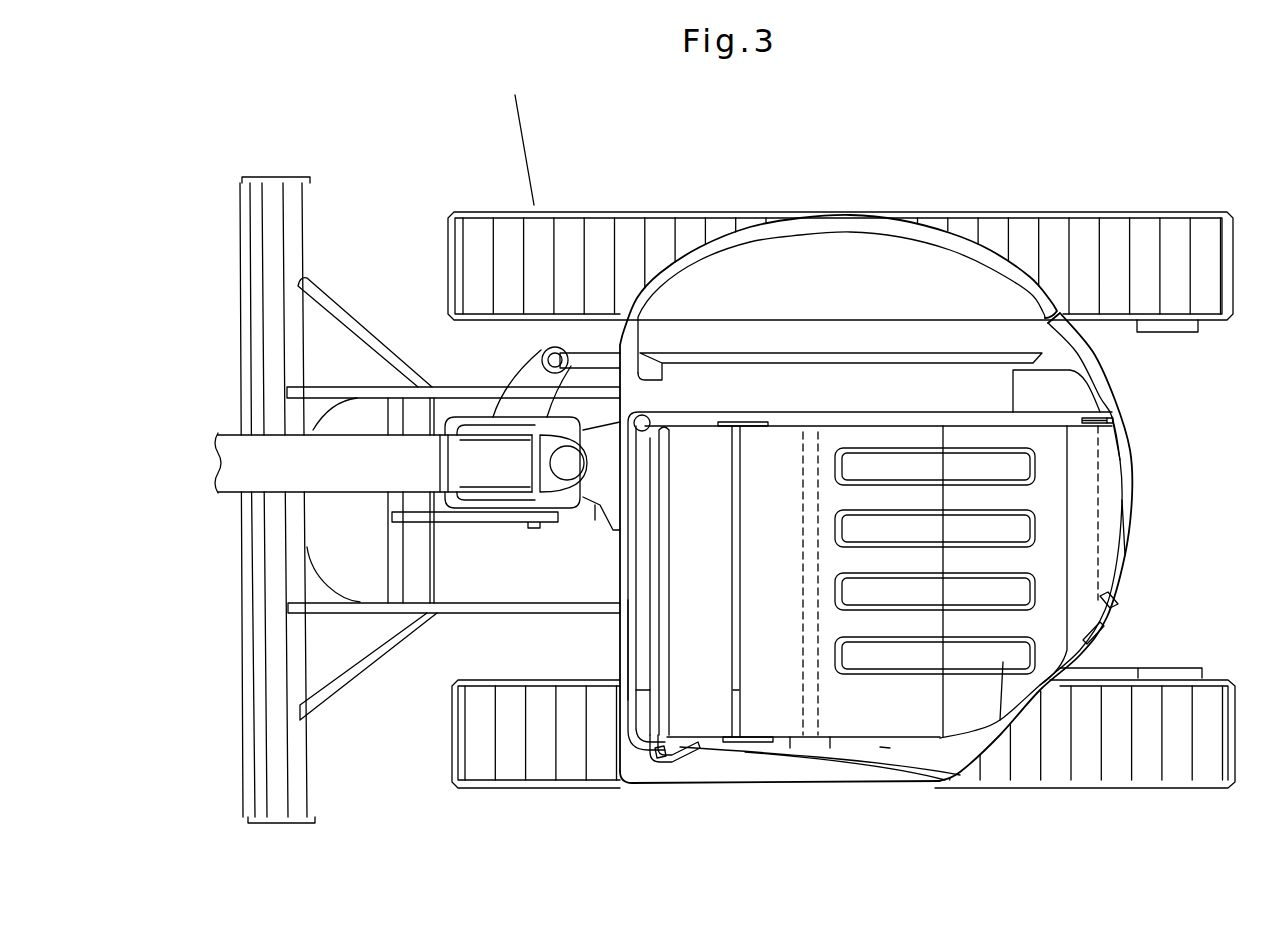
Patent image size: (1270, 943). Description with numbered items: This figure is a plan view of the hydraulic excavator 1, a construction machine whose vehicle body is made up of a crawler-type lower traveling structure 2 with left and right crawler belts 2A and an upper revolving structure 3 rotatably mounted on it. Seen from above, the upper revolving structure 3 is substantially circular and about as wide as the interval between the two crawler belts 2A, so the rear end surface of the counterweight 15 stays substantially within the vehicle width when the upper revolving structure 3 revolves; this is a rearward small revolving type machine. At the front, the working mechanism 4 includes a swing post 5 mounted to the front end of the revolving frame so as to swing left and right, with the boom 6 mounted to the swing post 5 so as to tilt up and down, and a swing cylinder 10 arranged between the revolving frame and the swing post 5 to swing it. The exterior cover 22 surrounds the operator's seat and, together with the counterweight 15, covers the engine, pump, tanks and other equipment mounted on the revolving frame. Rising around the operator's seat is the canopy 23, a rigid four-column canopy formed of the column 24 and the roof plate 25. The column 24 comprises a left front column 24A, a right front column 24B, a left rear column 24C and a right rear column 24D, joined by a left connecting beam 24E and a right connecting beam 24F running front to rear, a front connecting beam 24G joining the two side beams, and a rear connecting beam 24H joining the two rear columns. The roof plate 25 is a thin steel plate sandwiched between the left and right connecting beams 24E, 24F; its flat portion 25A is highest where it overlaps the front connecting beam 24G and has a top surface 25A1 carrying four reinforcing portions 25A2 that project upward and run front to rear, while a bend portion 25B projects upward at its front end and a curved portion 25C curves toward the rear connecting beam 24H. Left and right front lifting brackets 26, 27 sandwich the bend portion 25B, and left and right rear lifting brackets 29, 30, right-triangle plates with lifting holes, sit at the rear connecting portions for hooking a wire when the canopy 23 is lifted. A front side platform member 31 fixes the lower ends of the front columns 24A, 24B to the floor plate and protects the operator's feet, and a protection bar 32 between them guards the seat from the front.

The hydraulic excavator 1 is at (503, 89).
The lower traveling structure 2 is at (468, 745).
The crawler belt 2A is at (1178, 237).
The upper revolving structure 3 is at (982, 245).
The working mechanism 4 is at (228, 503).
The swing post 5 is at (457, 417).
The boom 6 is at (472, 480).
The swing cylinder 10 is at (598, 355).
The counterweight 15 is at (1108, 462).
The exterior cover 22 is at (862, 265).
The canopy 23 is at (1128, 484).
The column 24 is at (1003, 417).
The left front column 24A is at (672, 745).
The right front column 24B is at (688, 418).
The left rear column 24C is at (1118, 600).
The right rear column 24D is at (1110, 420).
The left connecting beam 24E is at (885, 750).
The right connecting beam 24F is at (943, 417).
The front connecting beam 24G is at (803, 432).
The rear connecting beam 24H is at (1105, 515).
The roof plate 25 is at (958, 715).
The flat portion 25A is at (835, 722).
The top surface 25A1 is at (790, 710).
The reinforcing portions 25A2 is at (1002, 662).
The bend portion 25B is at (733, 697).
The curved portion 25C is at (1085, 557).
The left front lifting bracket 26 is at (760, 742).
The right front lifting bracket 27 is at (754, 420).
The left rear lifting bracket 29 is at (1100, 632).
The right rear lifting bracket 30 is at (1093, 417).
The front side platform member 31 is at (625, 648).
The protection bar 32 is at (662, 688).